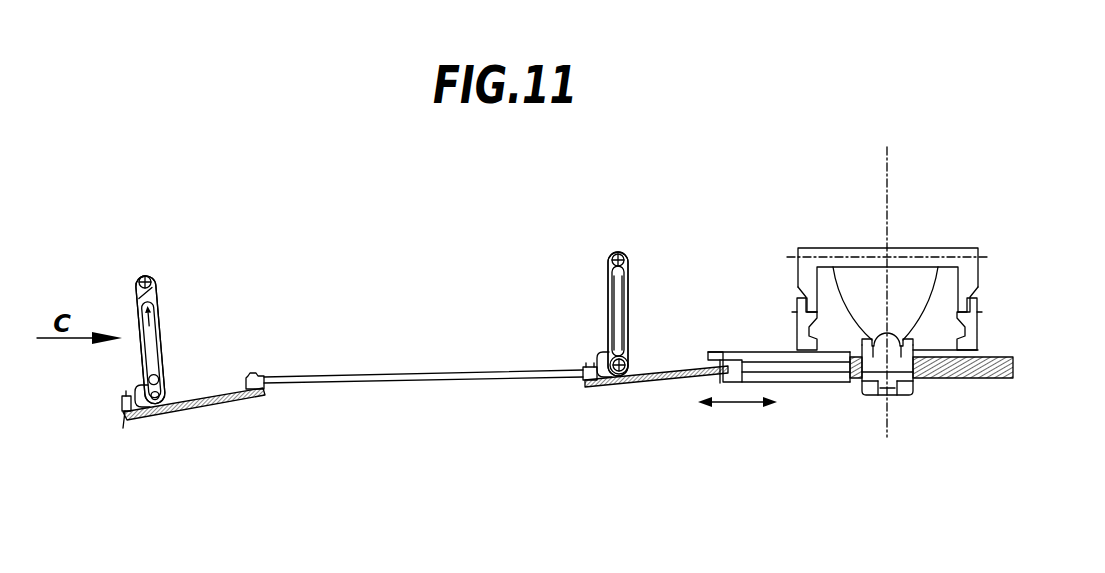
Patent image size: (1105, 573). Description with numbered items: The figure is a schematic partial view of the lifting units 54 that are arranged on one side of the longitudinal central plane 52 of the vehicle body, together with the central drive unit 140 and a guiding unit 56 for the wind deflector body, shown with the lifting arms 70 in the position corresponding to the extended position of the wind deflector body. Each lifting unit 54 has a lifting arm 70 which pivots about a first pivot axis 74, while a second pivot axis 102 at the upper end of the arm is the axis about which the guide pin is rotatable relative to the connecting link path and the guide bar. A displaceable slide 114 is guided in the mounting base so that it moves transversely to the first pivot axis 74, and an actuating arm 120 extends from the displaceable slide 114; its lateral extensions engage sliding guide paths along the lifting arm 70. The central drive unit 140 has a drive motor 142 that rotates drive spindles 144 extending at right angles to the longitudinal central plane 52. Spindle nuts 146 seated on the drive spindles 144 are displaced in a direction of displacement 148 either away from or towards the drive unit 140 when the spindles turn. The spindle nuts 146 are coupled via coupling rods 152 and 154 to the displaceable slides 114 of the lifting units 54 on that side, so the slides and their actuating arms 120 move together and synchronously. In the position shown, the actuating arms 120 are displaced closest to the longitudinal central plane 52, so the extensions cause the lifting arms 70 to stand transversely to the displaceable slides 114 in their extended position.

The longitudinal central plane 52 is at (893, 172).
The lifting unit 54 is at (167, 255).
The guiding unit 56 is at (990, 296).
The lifting arm 70 is at (161, 337).
The first pivot axis 74 is at (622, 378).
The second pivot axis 102 is at (153, 278).
The displaceable slide 114 is at (200, 400).
The actuating arm 120 is at (137, 390).
The central drive unit 140 is at (904, 338).
The drive motor 142 is at (836, 262).
The drive spindle 144 is at (855, 384).
The spindle nut 146 is at (773, 360).
The direction of displacement 148 is at (738, 405).
The coupling rod 152 is at (716, 352).
The coupling rod 154 is at (397, 378).